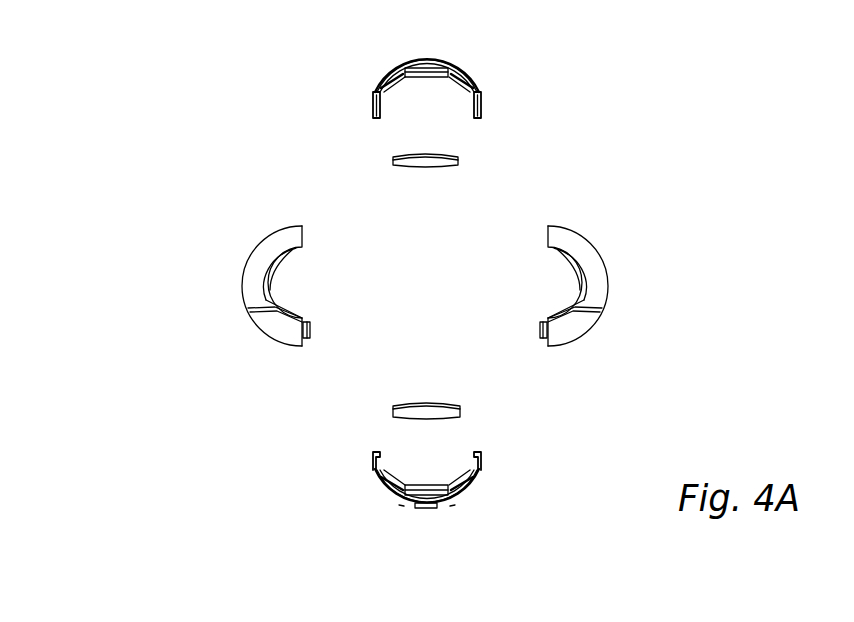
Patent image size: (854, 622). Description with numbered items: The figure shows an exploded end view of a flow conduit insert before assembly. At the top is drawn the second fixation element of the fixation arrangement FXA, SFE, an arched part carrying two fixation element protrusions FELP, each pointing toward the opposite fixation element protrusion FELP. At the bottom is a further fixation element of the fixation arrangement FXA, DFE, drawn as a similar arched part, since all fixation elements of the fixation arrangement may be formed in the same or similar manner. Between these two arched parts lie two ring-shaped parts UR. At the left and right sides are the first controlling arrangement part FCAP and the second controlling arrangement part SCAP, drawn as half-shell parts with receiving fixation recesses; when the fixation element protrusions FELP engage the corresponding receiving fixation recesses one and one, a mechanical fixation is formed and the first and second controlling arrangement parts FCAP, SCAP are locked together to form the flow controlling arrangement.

The fixation assembly, superior fixation element FXA, SFE is at (447, 65).
The fixation assembly, distal fixation element FXA, DFE is at (433, 508).
The fixation element protrusion FELP is at (388, 116).
The upper ring UR is at (420, 167).
The first controlling arrangement part FCAP is at (263, 243).
The second controlling arrangement part SCAP is at (598, 253).